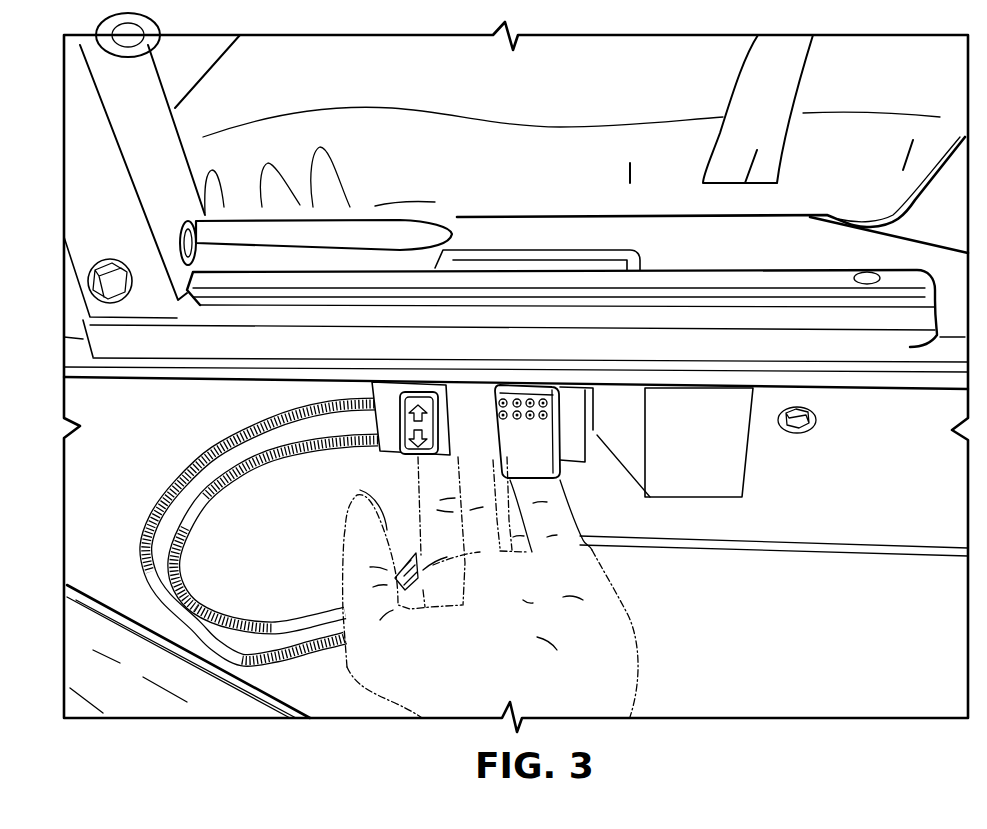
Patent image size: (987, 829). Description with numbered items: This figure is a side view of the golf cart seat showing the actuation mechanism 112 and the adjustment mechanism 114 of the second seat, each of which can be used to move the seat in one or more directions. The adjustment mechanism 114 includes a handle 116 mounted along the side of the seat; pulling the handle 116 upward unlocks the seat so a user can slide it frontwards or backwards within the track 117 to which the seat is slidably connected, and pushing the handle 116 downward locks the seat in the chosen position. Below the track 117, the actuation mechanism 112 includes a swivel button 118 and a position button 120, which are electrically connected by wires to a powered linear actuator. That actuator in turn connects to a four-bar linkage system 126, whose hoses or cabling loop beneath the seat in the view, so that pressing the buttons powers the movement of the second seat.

The actuation mechanism 112 is at (578, 459).
The adjustment mechanism 114 is at (460, 190).
The handle 116 is at (407, 232).
The track 117 is at (925, 343).
The swivel button 118 is at (410, 392).
The position button 120 is at (527, 383).
The four-bar linkage system 126 is at (142, 562).